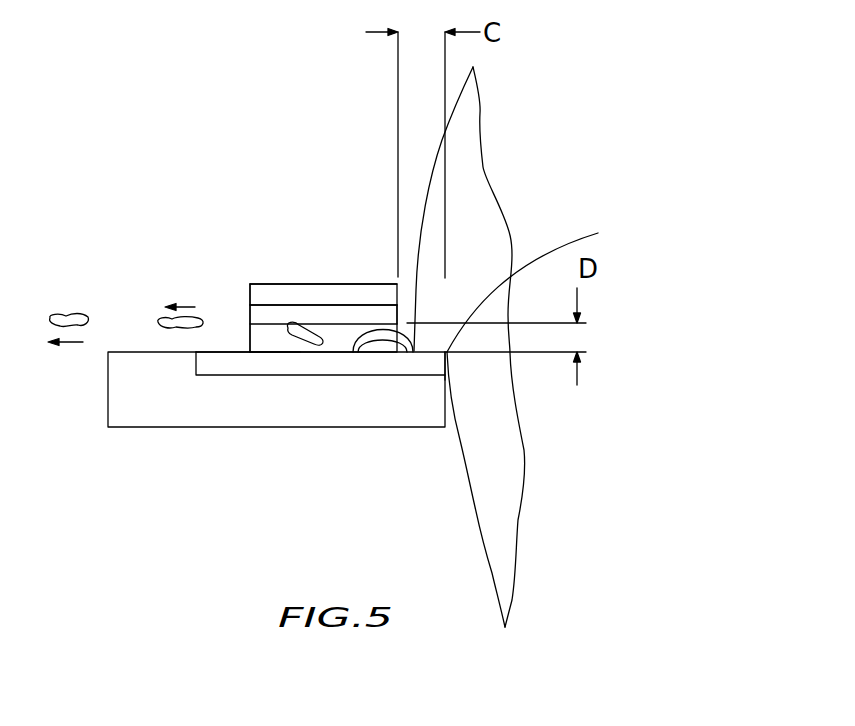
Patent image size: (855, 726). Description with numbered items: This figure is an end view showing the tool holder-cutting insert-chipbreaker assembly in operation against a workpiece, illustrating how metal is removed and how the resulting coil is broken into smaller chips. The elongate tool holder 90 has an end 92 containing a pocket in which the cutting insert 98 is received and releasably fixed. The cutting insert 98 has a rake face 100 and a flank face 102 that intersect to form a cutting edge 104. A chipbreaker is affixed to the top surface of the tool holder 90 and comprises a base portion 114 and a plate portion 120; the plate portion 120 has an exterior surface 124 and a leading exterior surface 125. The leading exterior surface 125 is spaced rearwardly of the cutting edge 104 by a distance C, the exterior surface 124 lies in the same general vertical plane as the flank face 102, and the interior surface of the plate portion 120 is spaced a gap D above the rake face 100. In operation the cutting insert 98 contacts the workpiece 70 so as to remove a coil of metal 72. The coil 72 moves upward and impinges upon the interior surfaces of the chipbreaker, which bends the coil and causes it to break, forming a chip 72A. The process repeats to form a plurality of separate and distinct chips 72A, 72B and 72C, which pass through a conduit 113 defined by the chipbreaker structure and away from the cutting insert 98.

The workpiece 70 is at (490, 221).
The coil of metal 72 is at (372, 340).
The chip 72A is at (297, 348).
The chip 72B is at (158, 320).
The chip 72C is at (90, 312).
The tool holder 90 is at (243, 227).
The end of tool holder 92 is at (120, 410).
The cutting insert 98 is at (225, 363).
The rake face 100 is at (213, 352).
The flank face 102 is at (447, 367).
The cutting edge 104 is at (548, 285).
The conduit 113 is at (267, 342).
The base portion 114 is at (247, 352).
The plate portion 120 is at (342, 292).
The exterior surface 124 is at (285, 313).
The leading exterior surface 125 is at (393, 316).